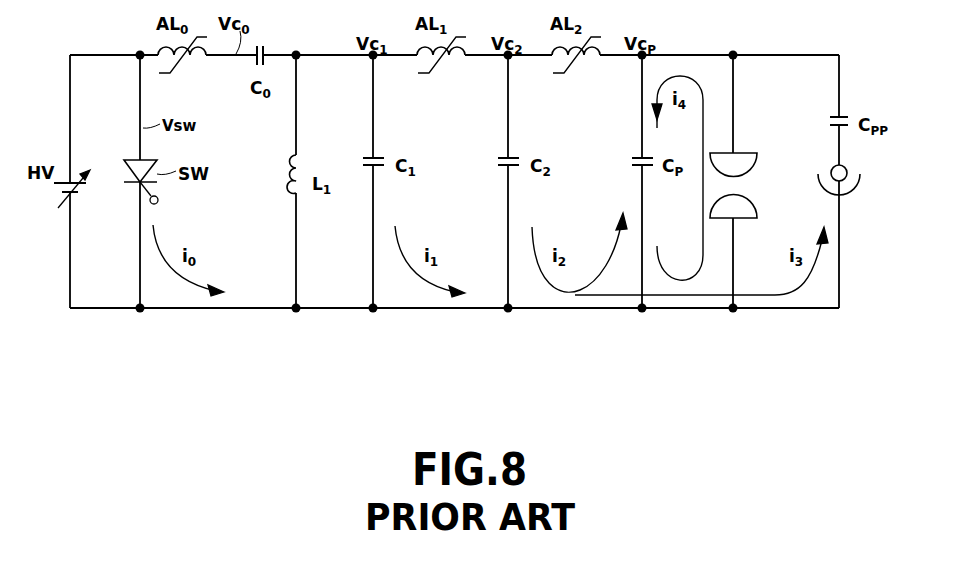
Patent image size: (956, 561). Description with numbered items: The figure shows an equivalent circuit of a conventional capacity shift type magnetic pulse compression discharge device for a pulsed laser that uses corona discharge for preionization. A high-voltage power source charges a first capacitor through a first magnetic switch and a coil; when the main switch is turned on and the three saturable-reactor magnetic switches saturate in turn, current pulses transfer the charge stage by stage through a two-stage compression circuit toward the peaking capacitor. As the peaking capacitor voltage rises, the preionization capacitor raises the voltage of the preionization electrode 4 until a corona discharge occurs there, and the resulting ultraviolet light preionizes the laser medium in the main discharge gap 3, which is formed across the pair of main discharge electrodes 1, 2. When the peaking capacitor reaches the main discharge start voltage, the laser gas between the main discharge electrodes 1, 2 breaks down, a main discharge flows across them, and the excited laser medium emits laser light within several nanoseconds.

The main discharge electrode 1 is at (758, 163).
The main discharge electrode 2 is at (758, 212).
The main discharge gap 3 is at (746, 190).
The corona preionization electrode 4 is at (852, 169).